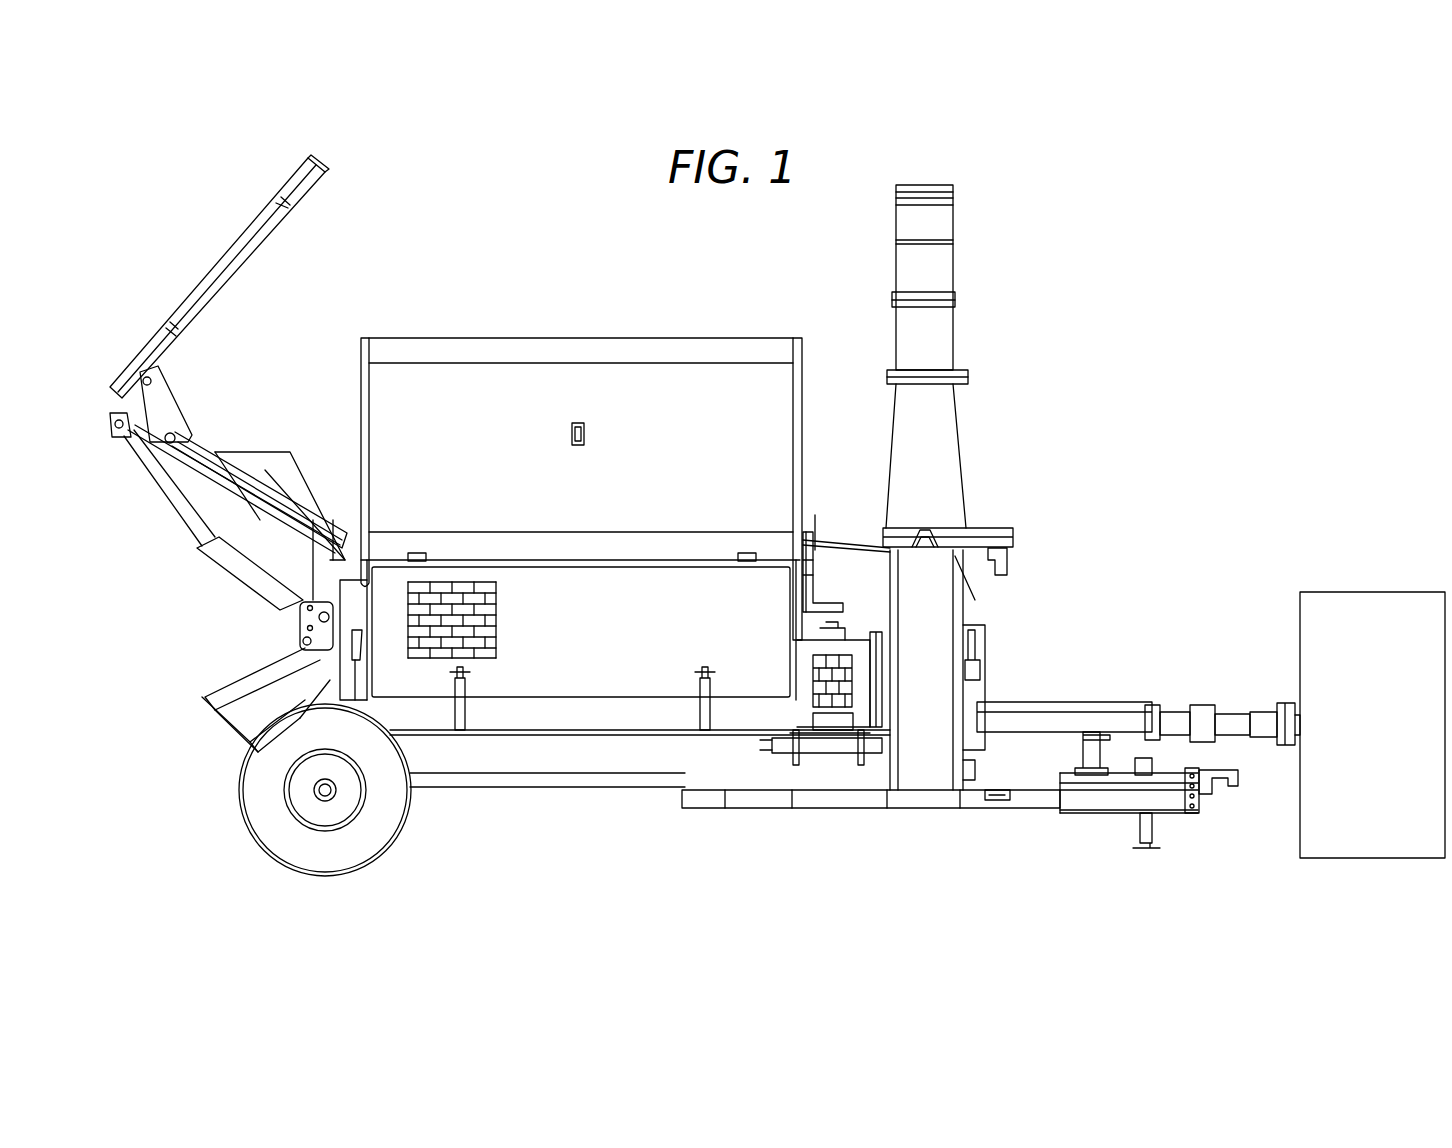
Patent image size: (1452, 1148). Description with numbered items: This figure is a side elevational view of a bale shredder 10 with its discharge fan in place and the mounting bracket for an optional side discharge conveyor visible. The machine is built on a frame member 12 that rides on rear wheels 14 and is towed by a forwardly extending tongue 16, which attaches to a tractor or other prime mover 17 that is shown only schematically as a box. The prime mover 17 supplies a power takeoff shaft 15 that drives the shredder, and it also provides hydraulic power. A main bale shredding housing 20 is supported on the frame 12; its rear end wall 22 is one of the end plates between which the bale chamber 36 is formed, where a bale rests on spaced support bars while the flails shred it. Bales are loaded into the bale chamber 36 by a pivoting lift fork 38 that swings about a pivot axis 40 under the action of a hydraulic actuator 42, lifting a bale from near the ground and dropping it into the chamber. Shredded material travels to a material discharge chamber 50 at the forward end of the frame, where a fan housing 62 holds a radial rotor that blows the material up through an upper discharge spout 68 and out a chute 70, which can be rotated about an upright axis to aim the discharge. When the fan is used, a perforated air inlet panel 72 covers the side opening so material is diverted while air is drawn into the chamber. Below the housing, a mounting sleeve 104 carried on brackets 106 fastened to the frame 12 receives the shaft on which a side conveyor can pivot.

The bale shredder 10 is at (720, 308).
The frame member 12 is at (550, 776).
The rear wheels 14 is at (382, 820).
The power takeoff shaft 15 is at (1180, 720).
The tongue 16 is at (1170, 797).
The prime mover 17 is at (1300, 640).
The main bale shredding housing 20 is at (640, 583).
The rear end wall 22 is at (366, 605).
The bale chamber 36 is at (493, 412).
The pivoting lift fork 38 is at (230, 288).
The pivot axis 40 is at (325, 617).
The hydraulic actuator 42 is at (218, 566).
The material discharge chamber 50 is at (851, 640).
The fan housing 62 is at (938, 620).
The upper discharge spout 68 is at (950, 485).
The chute 70 is at (942, 333).
The air inlet panel 72 is at (805, 648).
The mounting sleeve 104 is at (768, 745).
The brackets 106 is at (797, 765).